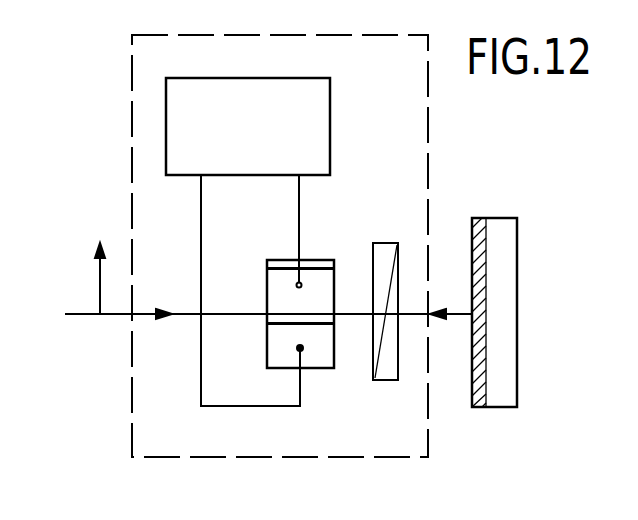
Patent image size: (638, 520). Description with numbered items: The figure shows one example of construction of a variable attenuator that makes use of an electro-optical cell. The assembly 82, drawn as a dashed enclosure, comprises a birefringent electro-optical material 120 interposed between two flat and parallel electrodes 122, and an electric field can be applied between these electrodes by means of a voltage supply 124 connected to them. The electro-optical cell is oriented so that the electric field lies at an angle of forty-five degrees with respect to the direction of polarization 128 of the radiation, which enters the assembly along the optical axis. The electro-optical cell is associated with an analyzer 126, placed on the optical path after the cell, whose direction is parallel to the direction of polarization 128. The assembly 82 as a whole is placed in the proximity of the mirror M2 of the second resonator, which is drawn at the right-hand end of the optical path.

The assembly 82 is at (201, 458).
The voltage supply 124 is at (268, 139).
The birefringent electro-optical material 120 is at (267, 340).
The electrodes 122 is at (320, 342).
The analyzer 126 is at (386, 381).
The direction of polarization 128 is at (100, 290).
The mirror M'2 M2 is at (476, 398).